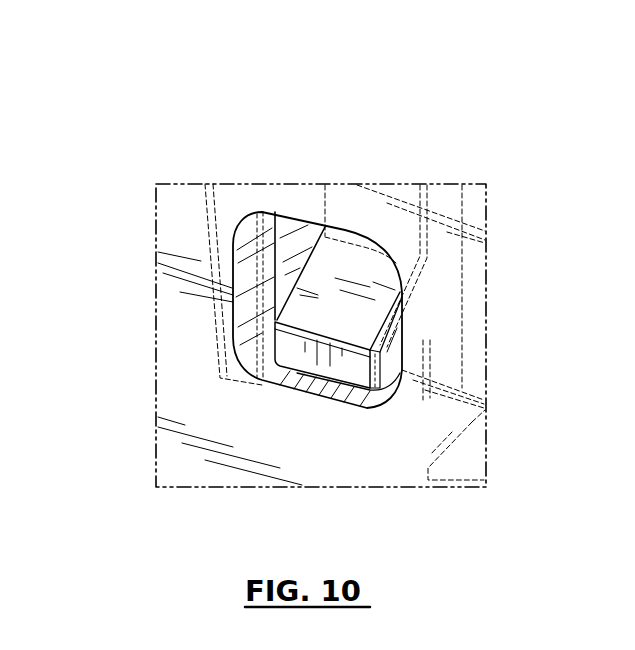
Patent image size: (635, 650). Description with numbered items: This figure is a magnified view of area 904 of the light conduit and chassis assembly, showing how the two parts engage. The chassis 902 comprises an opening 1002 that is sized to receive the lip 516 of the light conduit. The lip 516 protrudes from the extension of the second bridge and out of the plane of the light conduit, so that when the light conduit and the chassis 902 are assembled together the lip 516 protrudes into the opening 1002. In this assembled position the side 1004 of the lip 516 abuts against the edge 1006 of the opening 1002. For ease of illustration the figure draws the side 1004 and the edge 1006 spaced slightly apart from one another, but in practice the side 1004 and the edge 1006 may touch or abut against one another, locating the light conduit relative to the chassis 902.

The area 904 is at (400, 184).
The chassis 902 is at (183, 462).
The opening 1002 is at (240, 292).
The lip 516 is at (400, 343).
The side 1004 is at (405, 392).
The edge 1006 is at (337, 397).